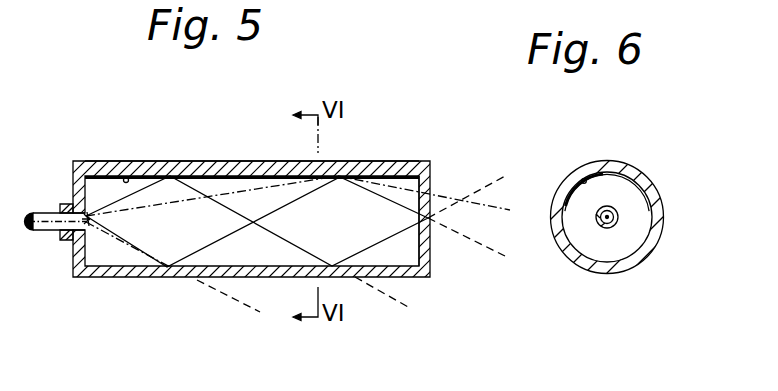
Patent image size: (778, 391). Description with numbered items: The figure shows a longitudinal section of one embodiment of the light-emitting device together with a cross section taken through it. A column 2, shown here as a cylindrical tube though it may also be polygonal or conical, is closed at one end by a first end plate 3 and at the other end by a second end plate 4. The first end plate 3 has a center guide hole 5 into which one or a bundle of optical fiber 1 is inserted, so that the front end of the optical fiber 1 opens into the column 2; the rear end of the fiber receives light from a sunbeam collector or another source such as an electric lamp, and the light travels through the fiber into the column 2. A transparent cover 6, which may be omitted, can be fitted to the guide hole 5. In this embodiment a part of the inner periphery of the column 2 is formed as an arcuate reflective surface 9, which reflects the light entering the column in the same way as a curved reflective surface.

In FIG. 5, the optical fiber 1 is at (45, 213).
In FIG. 6, the optical fiber 1 is at (598, 216).
In FIG. 5, the column 2 is at (396, 162).
In FIG. 6, the column 2 is at (633, 171).
In FIG. 5, the first end plate 3 is at (73, 188).
In FIG. 6, the first end plate 3 is at (638, 253).
In FIG. 5, the second end plate 4 is at (430, 250).
In FIG. 5, the center guide hole 5 is at (60, 236).
In FIG. 6, the center guide hole 5 is at (603, 224).
In FIG. 5, the transparent cover 6 is at (86, 221).
In FIG. 6, the transparent cover 6 is at (611, 213).
In FIG. 5, the arcuate reflective surface 9 is at (127, 177).
In FIG. 6, the arcuate reflective surface 9 is at (583, 179).